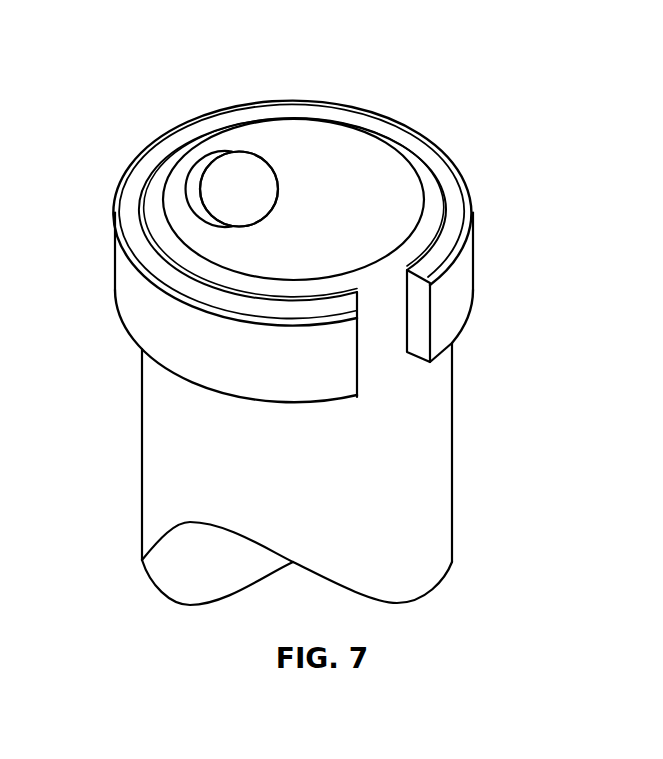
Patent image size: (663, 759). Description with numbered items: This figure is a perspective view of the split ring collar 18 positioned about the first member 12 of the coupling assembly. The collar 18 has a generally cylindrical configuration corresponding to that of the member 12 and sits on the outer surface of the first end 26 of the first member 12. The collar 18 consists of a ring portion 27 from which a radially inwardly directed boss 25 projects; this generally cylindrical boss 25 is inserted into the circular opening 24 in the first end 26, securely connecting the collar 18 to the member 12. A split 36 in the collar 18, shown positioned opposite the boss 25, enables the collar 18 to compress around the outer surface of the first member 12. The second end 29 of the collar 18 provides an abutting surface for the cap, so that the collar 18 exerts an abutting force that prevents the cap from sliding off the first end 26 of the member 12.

The first member 12 is at (150, 415).
The split ring collar 18 is at (453, 322).
The opening 24 is at (253, 127).
The boss 25 is at (205, 172).
The first end 26 is at (338, 139).
The ring portion 27 is at (128, 217).
The second end 29 is at (134, 338).
The split 36 is at (384, 355).